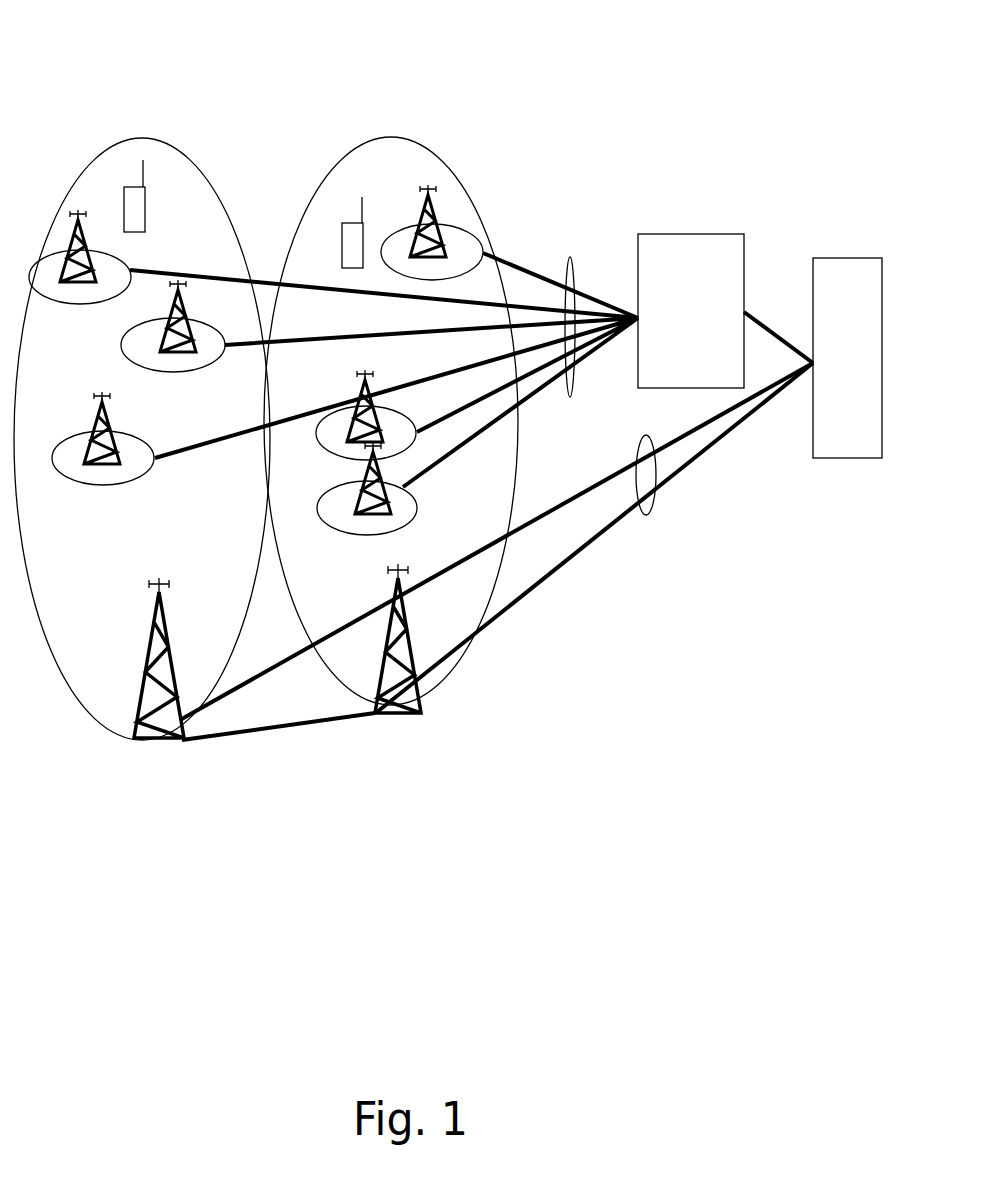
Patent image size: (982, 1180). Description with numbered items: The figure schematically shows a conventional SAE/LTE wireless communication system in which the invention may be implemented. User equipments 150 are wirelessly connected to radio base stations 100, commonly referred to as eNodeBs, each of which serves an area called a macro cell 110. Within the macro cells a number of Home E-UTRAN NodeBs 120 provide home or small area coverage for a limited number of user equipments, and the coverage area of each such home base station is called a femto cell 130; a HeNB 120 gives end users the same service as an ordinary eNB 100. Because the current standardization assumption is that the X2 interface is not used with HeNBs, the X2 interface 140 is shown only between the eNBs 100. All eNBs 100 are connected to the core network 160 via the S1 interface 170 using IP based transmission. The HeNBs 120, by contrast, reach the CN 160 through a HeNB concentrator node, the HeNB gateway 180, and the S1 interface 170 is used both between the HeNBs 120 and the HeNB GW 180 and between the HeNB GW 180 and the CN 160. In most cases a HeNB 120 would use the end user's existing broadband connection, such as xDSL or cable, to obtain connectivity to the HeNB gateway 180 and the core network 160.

The radio base station (eNB) 100 is at (420, 723).
The macro cell 110 is at (383, 143).
The Home E-UTRAN NodeB (HeNB) 120 is at (437, 202).
The femto cell 130 is at (468, 248).
The X2 interface 140 is at (280, 728).
The user equipment 150 is at (350, 237).
The core network (CN) 160 is at (878, 399).
The S1 interface 170 is at (788, 336).
The HeNB gateway 180 is at (703, 375).